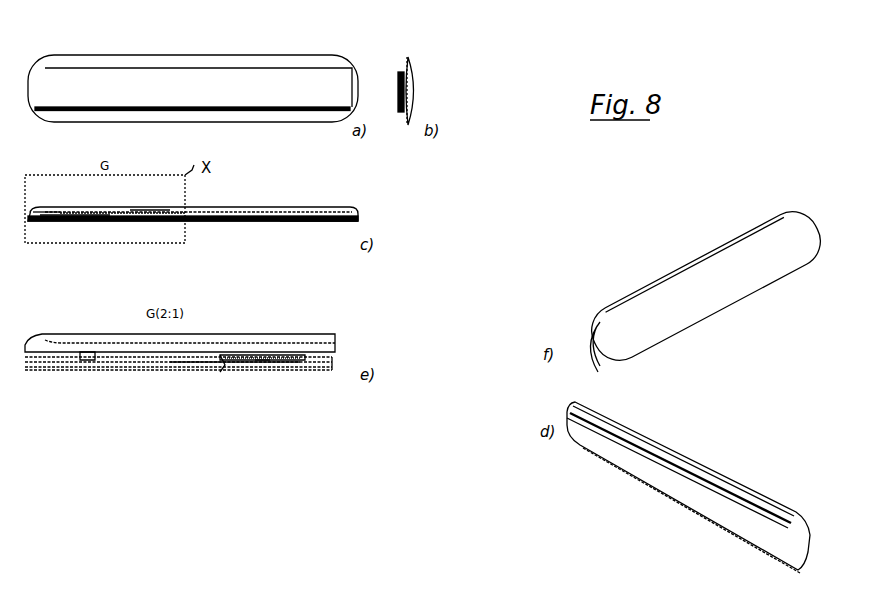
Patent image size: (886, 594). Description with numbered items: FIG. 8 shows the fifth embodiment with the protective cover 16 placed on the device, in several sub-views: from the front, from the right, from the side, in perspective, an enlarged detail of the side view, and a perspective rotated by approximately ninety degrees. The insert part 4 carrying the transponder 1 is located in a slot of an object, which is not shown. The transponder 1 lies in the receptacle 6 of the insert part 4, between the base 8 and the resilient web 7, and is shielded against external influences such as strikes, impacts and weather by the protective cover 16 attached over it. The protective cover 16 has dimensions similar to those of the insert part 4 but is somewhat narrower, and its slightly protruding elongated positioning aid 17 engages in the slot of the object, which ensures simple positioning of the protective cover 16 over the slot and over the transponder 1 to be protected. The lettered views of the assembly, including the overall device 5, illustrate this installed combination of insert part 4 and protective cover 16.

The transponder 1 is at (105, 228).
The insert part 4 is at (285, 61).
The device 5 is at (41, 132).
The receptacle 6 is at (125, 228).
The resilient web 7 is at (160, 228).
The base 8 is at (225, 62).
The protective cover 16 is at (310, 86).
The positioning aid 17 is at (243, 225).